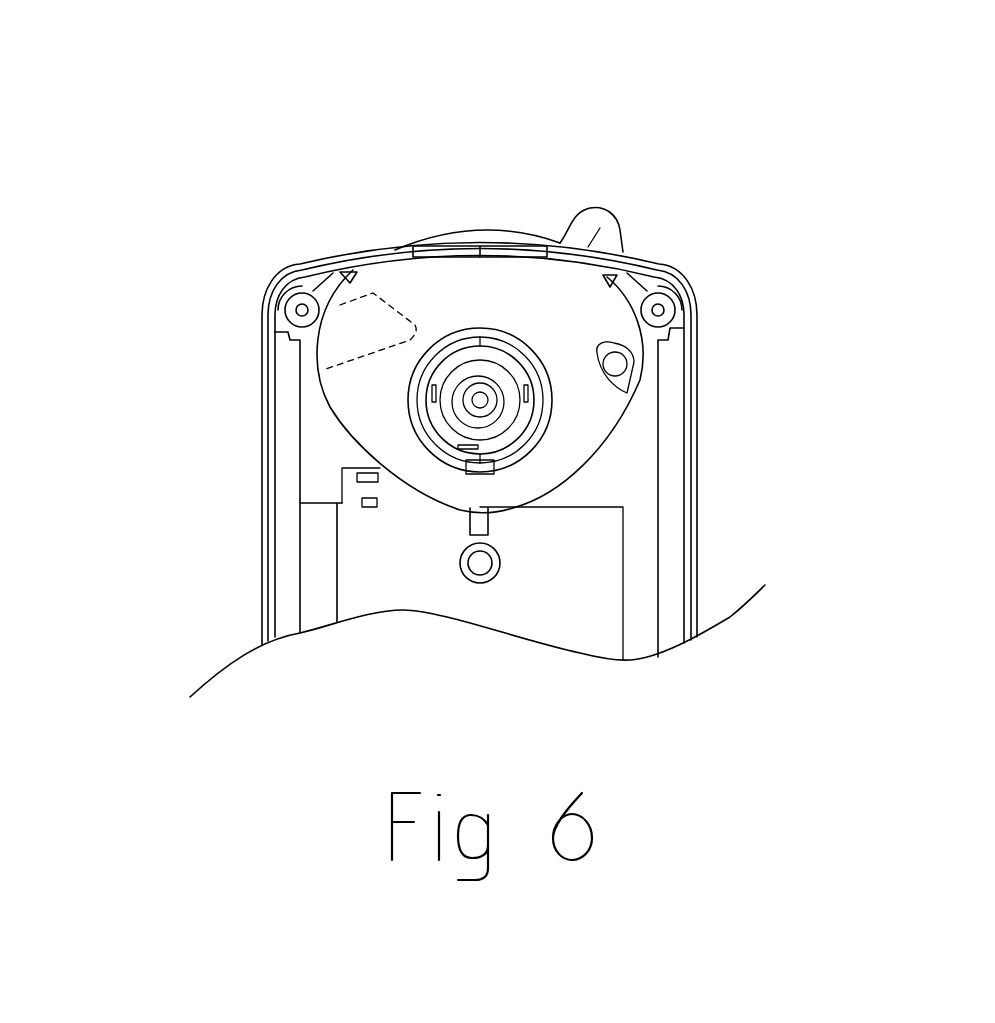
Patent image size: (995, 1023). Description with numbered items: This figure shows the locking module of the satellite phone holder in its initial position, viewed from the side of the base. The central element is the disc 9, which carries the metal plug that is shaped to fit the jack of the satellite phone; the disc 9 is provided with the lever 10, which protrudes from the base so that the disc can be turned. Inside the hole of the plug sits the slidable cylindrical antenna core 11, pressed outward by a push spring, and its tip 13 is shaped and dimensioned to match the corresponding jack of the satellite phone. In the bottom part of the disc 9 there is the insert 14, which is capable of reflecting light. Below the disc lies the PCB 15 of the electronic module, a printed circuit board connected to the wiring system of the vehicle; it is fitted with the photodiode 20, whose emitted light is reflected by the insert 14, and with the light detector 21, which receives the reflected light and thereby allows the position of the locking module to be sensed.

The disc 9 is at (363, 404).
The lever 10 is at (597, 212).
The antenna core 11 is at (493, 427).
The tip 13 is at (493, 393).
The insert 14 is at (368, 317).
The PCB 15 is at (600, 553).
The photodiode 20 is at (340, 475).
The light detector 21 is at (340, 500).